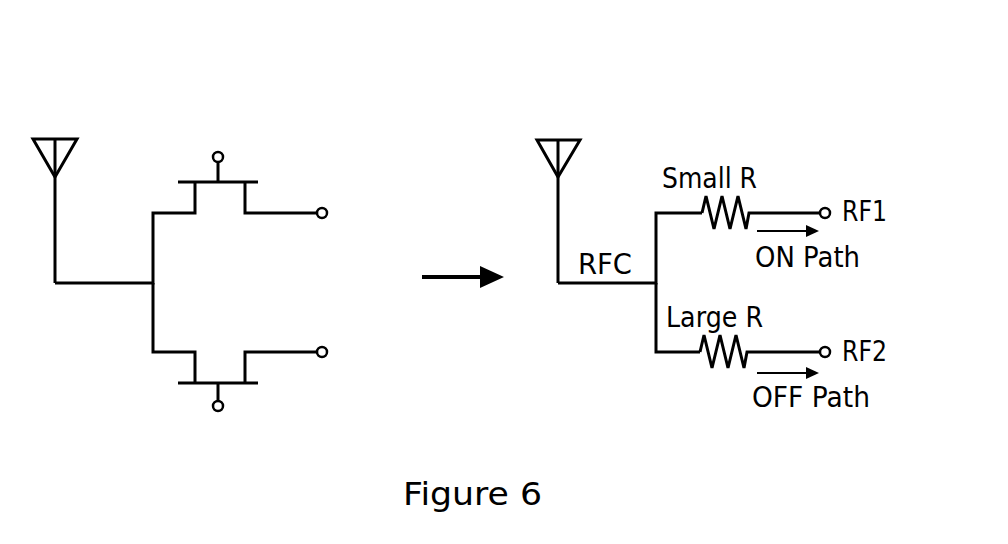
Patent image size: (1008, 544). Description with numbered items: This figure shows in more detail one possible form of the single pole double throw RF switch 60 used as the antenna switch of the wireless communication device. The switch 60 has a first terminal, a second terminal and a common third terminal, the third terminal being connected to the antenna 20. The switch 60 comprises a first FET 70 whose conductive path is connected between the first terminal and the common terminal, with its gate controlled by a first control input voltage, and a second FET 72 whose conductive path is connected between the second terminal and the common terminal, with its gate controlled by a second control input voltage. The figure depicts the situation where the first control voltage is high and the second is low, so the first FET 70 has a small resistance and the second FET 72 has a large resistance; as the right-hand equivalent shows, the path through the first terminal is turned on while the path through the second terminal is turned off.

The antenna 20 is at (76, 138).
The SP2T RF switch 60 is at (218, 235).
The first FET 70 is at (250, 181).
The second FET 72 is at (250, 385).